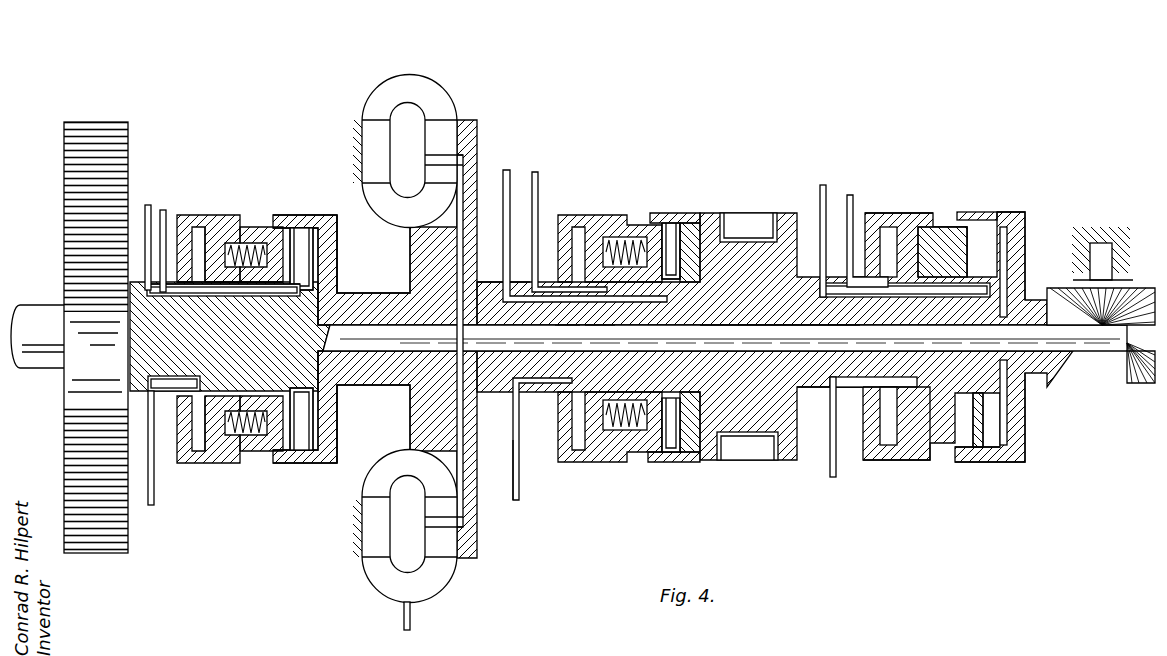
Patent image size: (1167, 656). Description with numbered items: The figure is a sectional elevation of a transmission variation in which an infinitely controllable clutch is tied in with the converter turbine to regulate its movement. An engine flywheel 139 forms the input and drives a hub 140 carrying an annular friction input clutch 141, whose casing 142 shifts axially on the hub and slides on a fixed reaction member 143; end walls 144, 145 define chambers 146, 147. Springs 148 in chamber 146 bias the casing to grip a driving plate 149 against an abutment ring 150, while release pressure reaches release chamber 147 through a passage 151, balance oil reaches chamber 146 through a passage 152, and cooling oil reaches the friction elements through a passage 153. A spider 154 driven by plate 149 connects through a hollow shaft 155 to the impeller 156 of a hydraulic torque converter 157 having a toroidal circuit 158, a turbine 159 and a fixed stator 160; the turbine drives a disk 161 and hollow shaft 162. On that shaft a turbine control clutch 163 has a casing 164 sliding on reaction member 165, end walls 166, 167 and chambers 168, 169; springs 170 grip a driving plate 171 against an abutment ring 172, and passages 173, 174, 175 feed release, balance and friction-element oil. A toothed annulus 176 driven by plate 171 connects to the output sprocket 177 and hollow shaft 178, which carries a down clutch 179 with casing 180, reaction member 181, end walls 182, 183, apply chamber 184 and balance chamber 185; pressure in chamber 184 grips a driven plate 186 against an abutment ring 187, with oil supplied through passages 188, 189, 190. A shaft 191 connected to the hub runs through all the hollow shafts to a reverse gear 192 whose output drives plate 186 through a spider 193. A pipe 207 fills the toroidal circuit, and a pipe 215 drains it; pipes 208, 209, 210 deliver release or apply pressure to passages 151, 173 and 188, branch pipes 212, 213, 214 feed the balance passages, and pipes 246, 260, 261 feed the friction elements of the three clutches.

The engine flywheel 139 is at (64, 170).
The hub 140 is at (240, 355).
The input clutch 141 is at (220, 189).
The casing 142 is at (207, 224).
The reaction member 143 is at (230, 225).
The end wall 144 is at (278, 227).
The end wall 145 is at (183, 215).
The chamber 146 is at (222, 447).
The release chamber 147 is at (192, 445).
The springs 148 is at (246, 438).
The driving plate 149 is at (285, 450).
The abutment ring 150 is at (308, 465).
The passage 151 is at (196, 378).
The passage 152 is at (232, 287).
The passage 153 is at (250, 298).
The spider 154 is at (320, 216).
The hollow shaft 155 is at (362, 290).
The impeller 156 is at (477, 152).
The hydraulic torque converter 157 is at (418, 123).
The toroidal circuit 158 is at (425, 88).
The turbine 159 is at (440, 130).
The stator 160 is at (370, 120).
The disk 161 is at (455, 170).
The hollow shaft 162 is at (487, 278).
The turbine control clutch 163 is at (641, 198).
The casing 164 is at (590, 214).
The reaction member 165 is at (608, 227).
The end wall 166 is at (672, 226).
The end wall 167 is at (563, 217).
The chamber 168 is at (603, 450).
The release chamber 169 is at (576, 460).
The springs 170 is at (625, 442).
The driving plate 171 is at (672, 460).
The abutment ring 172 is at (693, 447).
The passage 173 is at (543, 383).
The passage 174 is at (597, 300).
The passage 175 is at (567, 300).
The toothed annulus 176 is at (690, 213).
The sprocket 177 is at (780, 213).
The hollow shaft 178 is at (808, 388).
The down clutch 179 is at (929, 200).
The casing 180 is at (893, 214).
The reaction member 181 is at (910, 222).
The end wall 182 is at (941, 227).
The end wall 183 is at (872, 213).
The apply chamber 184 is at (917, 453).
The balance chamber 185 is at (886, 445).
The driven plate 186 is at (978, 455).
The abutment ring 187 is at (1003, 462).
The passage 188 is at (887, 375).
The passage 189 is at (898, 292).
The passage 190 is at (927, 302).
The shaft 191 is at (786, 341).
The reverse gear 192 is at (1106, 216).
The spider 193 is at (1010, 212).
The pipe 207 is at (345, 527).
The pipe 208 is at (151, 505).
The pipe 209 is at (517, 500).
The pipe 210 is at (833, 478).
The branch pipe 212 is at (163, 210).
The branch pipe 213 is at (538, 176).
The branch pipe 214 is at (849, 195).
The pipe 215 is at (412, 614).
The pipe 246 is at (148, 205).
The pipe 260 is at (508, 170).
The pipe 261 is at (820, 185).